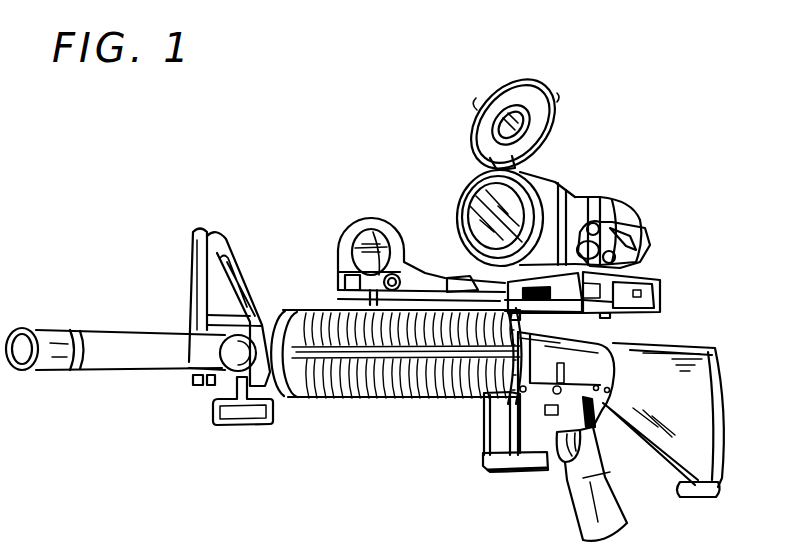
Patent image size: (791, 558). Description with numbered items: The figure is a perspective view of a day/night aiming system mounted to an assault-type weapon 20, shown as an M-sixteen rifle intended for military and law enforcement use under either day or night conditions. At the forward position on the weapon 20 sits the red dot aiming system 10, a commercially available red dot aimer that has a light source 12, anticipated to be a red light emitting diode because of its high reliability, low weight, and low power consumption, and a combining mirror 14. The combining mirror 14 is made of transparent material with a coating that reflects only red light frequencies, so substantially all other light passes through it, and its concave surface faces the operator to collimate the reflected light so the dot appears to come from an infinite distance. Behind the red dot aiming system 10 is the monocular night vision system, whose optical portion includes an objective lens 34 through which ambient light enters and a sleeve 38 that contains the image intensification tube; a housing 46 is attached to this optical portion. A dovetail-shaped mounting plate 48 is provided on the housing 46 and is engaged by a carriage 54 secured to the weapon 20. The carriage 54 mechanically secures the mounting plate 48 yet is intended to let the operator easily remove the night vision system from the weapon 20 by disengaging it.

The red dot aiming system 10 is at (341, 158).
The light source 12 is at (454, 276).
The combining mirror 14 is at (354, 240).
The weapon 20 is at (389, 408).
The objective lens 34 is at (461, 213).
The sleeve 38 is at (574, 193).
The housing 46 is at (646, 249).
The mounting plate 48 is at (658, 278).
The carriage 54 is at (658, 306).